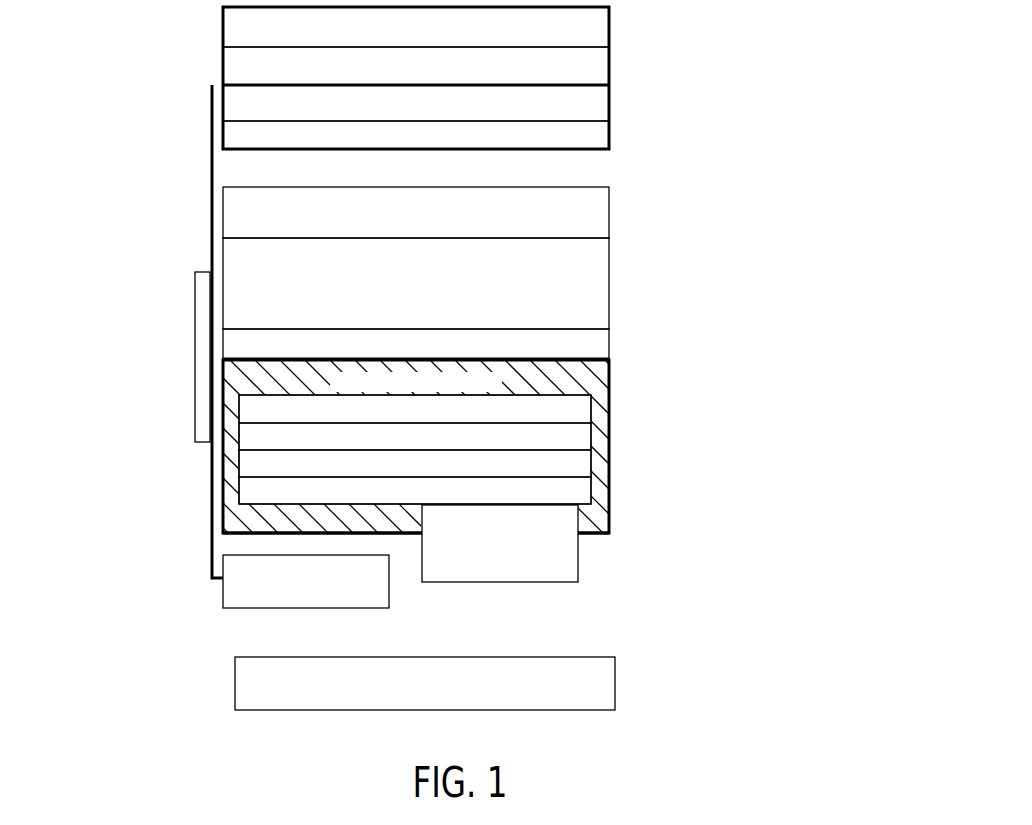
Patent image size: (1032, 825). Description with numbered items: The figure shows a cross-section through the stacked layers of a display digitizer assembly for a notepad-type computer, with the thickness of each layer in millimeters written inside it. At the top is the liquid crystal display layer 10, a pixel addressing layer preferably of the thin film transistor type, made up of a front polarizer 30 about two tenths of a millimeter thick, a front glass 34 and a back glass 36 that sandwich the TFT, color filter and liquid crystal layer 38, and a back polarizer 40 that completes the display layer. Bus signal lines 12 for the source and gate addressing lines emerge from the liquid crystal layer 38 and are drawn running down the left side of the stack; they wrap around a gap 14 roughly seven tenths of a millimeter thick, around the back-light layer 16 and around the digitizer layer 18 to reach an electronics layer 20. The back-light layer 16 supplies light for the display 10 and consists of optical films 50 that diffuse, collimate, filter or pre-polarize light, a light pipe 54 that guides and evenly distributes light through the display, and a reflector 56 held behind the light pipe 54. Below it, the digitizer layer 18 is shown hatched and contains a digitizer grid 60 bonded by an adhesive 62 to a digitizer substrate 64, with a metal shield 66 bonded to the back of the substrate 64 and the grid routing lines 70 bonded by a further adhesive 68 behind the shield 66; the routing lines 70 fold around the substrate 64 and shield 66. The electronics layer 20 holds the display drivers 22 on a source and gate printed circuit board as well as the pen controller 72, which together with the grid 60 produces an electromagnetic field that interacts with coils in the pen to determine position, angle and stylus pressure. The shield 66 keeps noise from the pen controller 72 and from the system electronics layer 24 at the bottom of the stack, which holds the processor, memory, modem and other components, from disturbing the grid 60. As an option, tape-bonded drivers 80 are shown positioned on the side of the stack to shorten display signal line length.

The liquid crystal display layer 10 is at (485, 87).
The bus signal lines 12 is at (209, 190).
The gap 14 is at (595, 173).
The back-light layer 16 is at (519, 278).
The digitizer layer 18 is at (429, 446).
The electronics layer 20 is at (475, 564).
The drivers 22 is at (222, 594).
The system electronics layer 24 is at (663, 694).
The front polarizer 30 is at (600, 20).
The front glass 34 is at (233, 65).
The back glass 36 is at (600, 109).
The liquid crystal layer 38 is at (612, 88).
The back polarizer 40 is at (600, 136).
The optical films 50 is at (600, 212).
The light pipe 54 is at (600, 285).
The reflector 56 is at (600, 343).
The digitizer grid 60 is at (598, 377).
The adhesive bond 62 is at (247, 408).
The digitizer substrate 64 is at (247, 437).
The metal shield 66 is at (582, 460).
The adhesive bond 68 is at (582, 487).
The grid routing lines 70 is at (197, 493).
The pen controller 72 is at (498, 584).
The drivers 80 is at (195, 283).